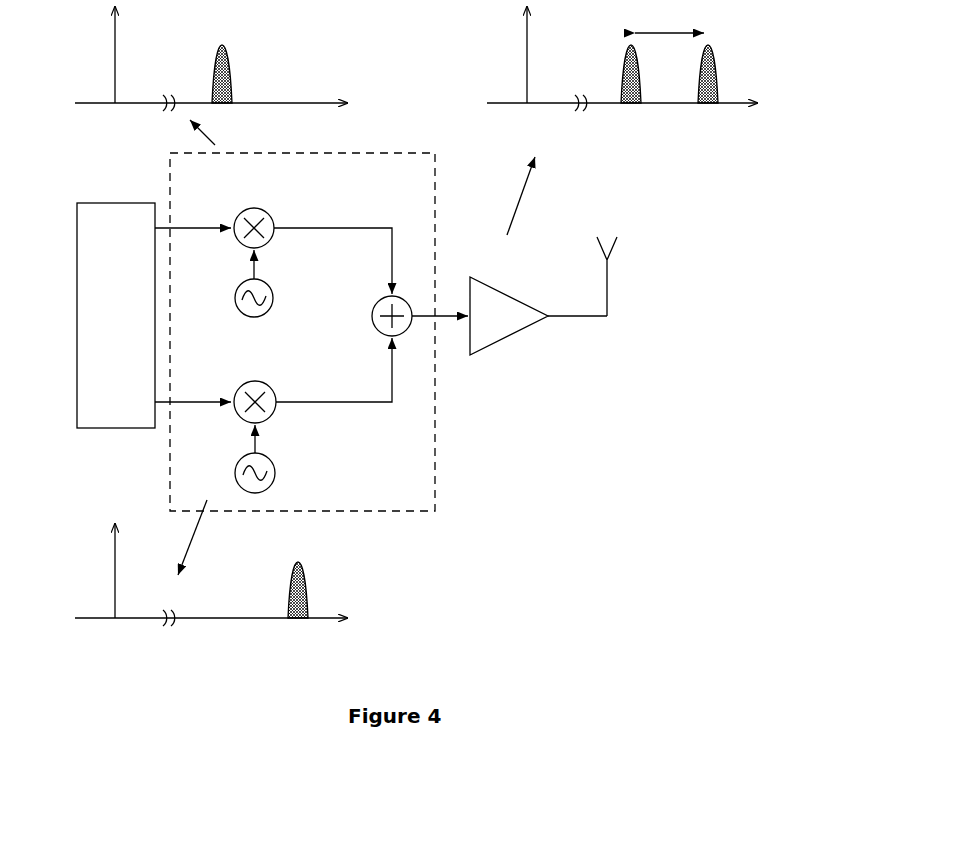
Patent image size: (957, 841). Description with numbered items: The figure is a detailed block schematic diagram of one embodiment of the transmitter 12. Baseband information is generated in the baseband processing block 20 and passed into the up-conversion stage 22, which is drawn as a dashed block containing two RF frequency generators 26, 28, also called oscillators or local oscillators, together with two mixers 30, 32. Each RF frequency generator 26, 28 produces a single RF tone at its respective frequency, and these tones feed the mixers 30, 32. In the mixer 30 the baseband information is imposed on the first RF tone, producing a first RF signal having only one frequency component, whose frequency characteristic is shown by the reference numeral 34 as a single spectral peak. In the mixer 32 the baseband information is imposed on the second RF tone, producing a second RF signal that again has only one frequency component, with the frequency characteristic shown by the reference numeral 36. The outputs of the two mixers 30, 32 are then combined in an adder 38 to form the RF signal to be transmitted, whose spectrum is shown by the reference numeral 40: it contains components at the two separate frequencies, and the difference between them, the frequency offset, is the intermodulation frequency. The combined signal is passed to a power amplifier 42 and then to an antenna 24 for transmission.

The transmitter 12 is at (740, 574).
The baseband processing block 20 is at (77, 318).
The up-conversion stage 22 is at (435, 435).
The antenna 24 is at (608, 280).
The RF frequency generator 26 is at (239, 285).
The RF frequency generator 28 is at (240, 456).
The mixer 30 is at (271, 213).
The mixer 32 is at (266, 383).
The frequency characteristic of the first RF signal 34 is at (278, 37).
The frequency characteristic of the second RF signal 36 is at (331, 570).
The adder 38 is at (398, 298).
The frequency characteristic of the combined RF signal 40 is at (740, 47).
The power amplifier 42 is at (505, 340).